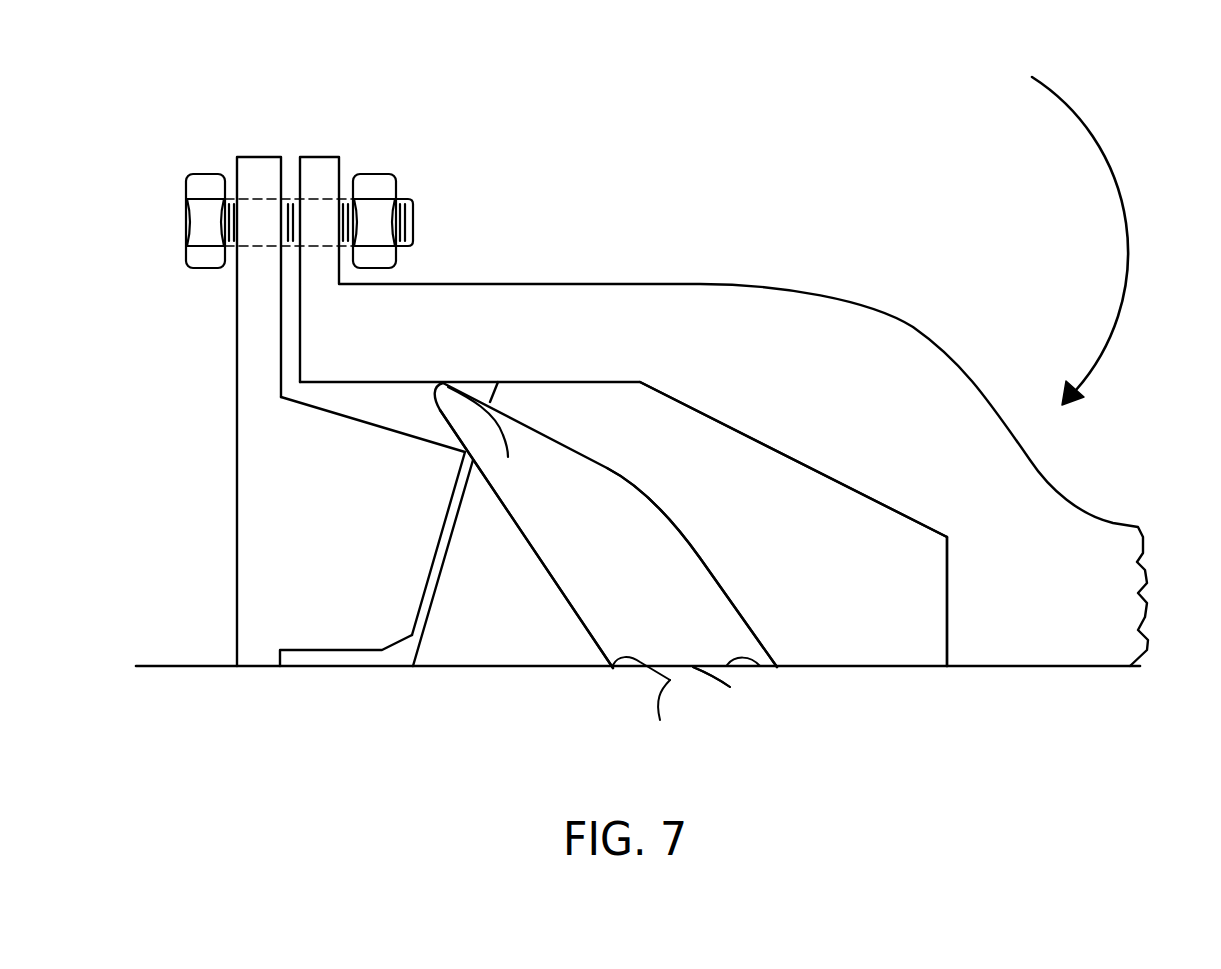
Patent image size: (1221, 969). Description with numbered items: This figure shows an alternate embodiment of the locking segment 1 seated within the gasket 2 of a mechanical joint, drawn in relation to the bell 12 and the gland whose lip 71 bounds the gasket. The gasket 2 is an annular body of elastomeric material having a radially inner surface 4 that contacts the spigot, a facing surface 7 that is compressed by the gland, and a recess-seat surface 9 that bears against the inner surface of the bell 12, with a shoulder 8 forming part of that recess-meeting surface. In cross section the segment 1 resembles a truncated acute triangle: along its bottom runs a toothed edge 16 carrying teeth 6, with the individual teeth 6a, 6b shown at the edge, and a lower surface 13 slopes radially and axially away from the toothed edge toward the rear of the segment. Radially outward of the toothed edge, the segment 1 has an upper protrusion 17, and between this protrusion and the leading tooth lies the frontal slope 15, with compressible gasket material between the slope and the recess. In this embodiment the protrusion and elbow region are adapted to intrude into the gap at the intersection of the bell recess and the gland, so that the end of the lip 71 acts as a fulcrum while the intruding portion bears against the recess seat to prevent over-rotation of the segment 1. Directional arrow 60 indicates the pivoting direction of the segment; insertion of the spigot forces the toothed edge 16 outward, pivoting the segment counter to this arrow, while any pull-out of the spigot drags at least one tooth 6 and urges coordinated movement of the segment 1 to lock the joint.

The locking segment 1 is at (565, 560).
The gasket 2 is at (842, 513).
The radially inner surface 4 is at (928, 667).
The teeth 6 is at (610, 668).
The right foot edge 6a is at (777, 668).
The left foot edge 6b is at (730, 687).
The facing surface 7 is at (432, 605).
The shoulder 8 is at (948, 608).
The recess-seat surface 9 is at (688, 405).
The bell 12 is at (837, 300).
The lower surface 13 is at (528, 548).
The frontal slope 15 is at (685, 530).
The toothed edge 16 is at (667, 660).
The upper protrusion 17 is at (495, 442).
The directional arrow 60 is at (1128, 242).
The lip 71 is at (438, 542).